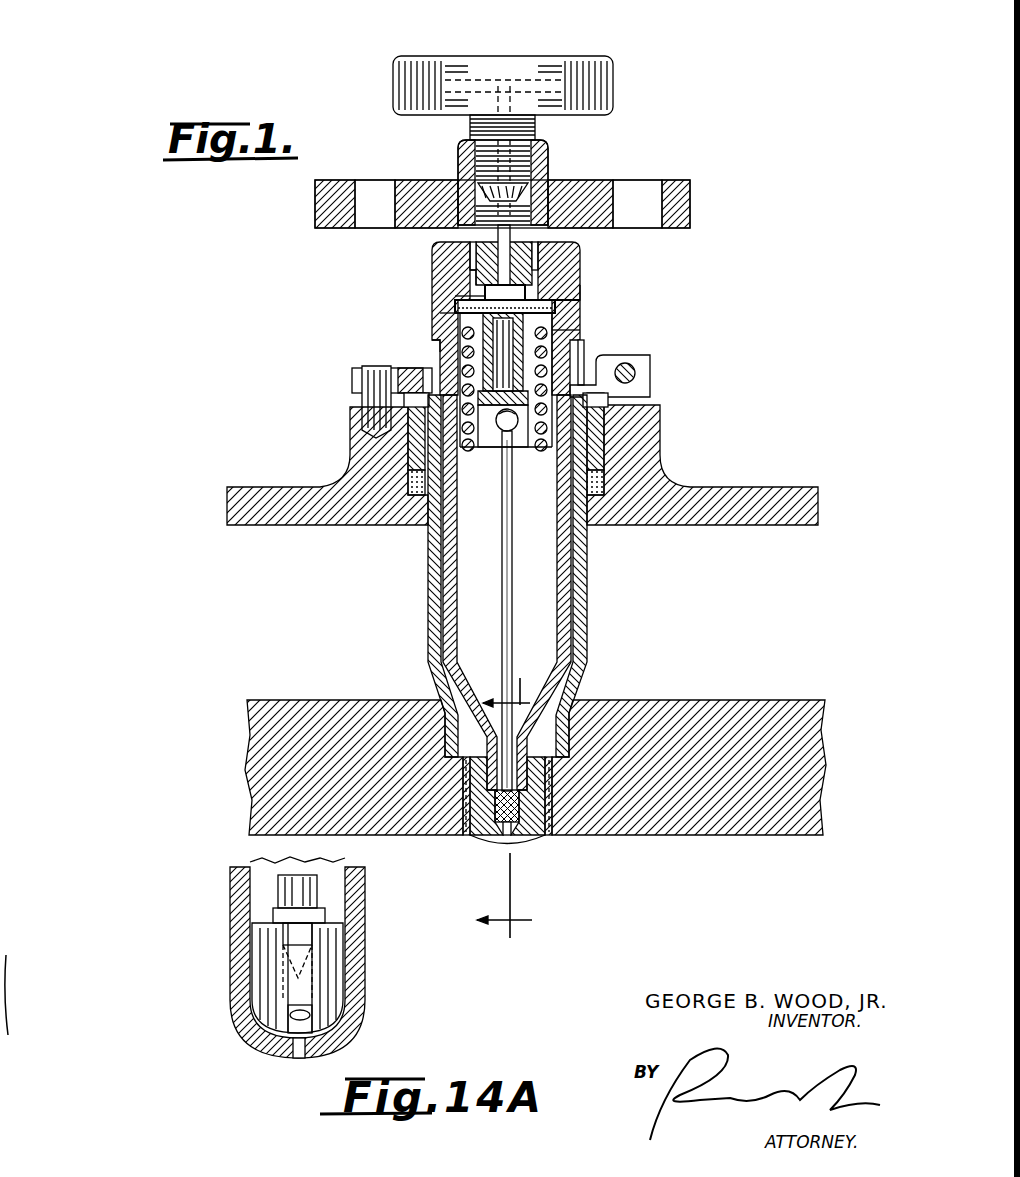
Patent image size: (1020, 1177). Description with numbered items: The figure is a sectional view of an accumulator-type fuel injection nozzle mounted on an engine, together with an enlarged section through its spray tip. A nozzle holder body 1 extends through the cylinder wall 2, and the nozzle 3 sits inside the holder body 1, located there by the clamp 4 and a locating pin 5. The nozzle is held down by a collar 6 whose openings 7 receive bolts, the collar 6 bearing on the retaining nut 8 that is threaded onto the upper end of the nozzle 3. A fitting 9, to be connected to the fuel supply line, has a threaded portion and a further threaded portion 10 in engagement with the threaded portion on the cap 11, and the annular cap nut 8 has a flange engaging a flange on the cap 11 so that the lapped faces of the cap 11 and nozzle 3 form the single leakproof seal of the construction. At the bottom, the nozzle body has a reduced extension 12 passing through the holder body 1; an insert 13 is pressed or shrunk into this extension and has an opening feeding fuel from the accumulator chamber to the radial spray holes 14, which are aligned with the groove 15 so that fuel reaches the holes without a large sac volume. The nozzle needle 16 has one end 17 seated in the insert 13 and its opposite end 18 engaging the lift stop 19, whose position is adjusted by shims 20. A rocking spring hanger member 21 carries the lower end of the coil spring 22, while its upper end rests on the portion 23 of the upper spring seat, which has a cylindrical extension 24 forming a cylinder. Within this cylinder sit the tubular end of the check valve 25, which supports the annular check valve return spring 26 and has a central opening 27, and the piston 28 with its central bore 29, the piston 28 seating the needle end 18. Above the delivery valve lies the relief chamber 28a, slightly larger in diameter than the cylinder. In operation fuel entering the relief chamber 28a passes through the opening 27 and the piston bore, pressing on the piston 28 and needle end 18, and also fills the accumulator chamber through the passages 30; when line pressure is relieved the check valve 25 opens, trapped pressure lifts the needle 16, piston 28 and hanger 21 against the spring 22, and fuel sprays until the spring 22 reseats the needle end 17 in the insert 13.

In FIG. 1, the nozzle holder body 1 is at (586, 584).
In FIG. 1, the cylinder wall 2 is at (640, 705).
In FIG. 1, the nozzle 3 is at (450, 540).
In FIG. 1, the clamp 4 is at (632, 366).
In FIG. 1, the locating pin 5 is at (362, 425).
In FIG. 1, the collar 6 is at (580, 192).
In FIG. 1, the openings 7 is at (372, 195).
In FIG. 1, the retaining nut 8 is at (440, 253).
In FIG. 1, the fitting 9 is at (512, 70).
In FIG. 1, the adjusting nut 10 is at (542, 162).
In FIG. 1, the cap 11 is at (546, 244).
In FIG. 1, the reduced extension 12 is at (467, 835).
In FIG. 14A, the reduced extension 12 is at (243, 975).
In FIG. 1, the insert 13 is at (533, 842).
In FIG. 14A, the insert 13 is at (333, 968).
In FIG. 1, the radial spray holes 14 is at (483, 880).
In FIG. 14A, the radial spray holes 14 is at (294, 1058).
In FIG. 14A, the groove 15 is at (303, 1020).
In FIG. 1, the nozzle needle 16 is at (505, 652).
In FIG. 14A, the nozzle needle 16 is at (295, 888).
In FIG. 1, the needle end 17 is at (522, 805).
In FIG. 14A, the needle end 17 is at (287, 917).
In FIG. 1, the needle end 18 is at (495, 432).
In FIG. 1, the lift stop 19 is at (420, 393).
In FIG. 1, the shims 20 is at (582, 304).
In FIG. 1, the rocking spring hanger member 21 is at (541, 448).
In FIG. 1, the coil spring 22 is at (440, 336).
In FIG. 1, the upper spring seat portion 23 is at (582, 322).
In FIG. 1, the cylindrical extension 24 is at (538, 326).
In FIG. 1, the check valve 25 is at (448, 316).
In FIG. 1, the check valve return spring 26 is at (455, 298).
In FIG. 1, the central opening 27 is at (584, 332).
In FIG. 1, the piston 28 is at (620, 392).
In FIG. 1, the relief chamber 28a is at (452, 290).
In FIG. 1, the central bore 29 is at (438, 352).
In FIG. 1, the passages 30 is at (582, 286).